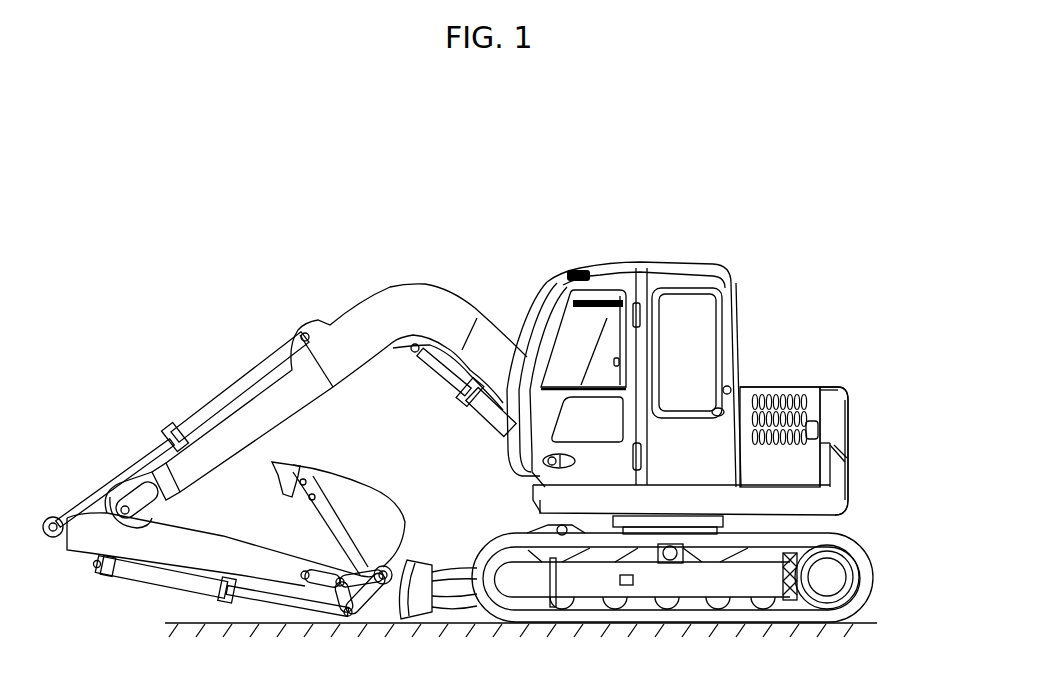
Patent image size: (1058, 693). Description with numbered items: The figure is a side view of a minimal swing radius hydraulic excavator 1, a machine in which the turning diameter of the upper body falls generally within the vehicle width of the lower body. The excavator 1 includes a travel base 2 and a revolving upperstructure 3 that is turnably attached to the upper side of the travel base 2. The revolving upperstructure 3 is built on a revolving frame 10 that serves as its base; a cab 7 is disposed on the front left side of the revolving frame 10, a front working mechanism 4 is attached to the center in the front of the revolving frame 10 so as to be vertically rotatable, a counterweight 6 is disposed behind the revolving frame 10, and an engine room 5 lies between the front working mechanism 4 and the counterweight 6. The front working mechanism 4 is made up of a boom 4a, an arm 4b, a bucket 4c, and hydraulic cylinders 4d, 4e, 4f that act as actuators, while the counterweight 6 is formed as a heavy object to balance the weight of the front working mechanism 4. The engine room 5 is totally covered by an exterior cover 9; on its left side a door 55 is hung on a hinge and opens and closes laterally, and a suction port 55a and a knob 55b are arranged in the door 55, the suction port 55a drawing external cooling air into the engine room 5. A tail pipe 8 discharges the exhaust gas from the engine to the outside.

The hydraulic excavator 1 is at (155, 313).
The travel base 2 is at (736, 581).
The revolving upperstructure 3 is at (739, 303).
The front working mechanism 4 is at (367, 300).
The boom 4a is at (430, 290).
The arm 4b is at (223, 533).
The bucket 4c is at (348, 478).
The hydraulic cylinder 4d is at (462, 396).
The hydraulic cylinder 4e is at (193, 407).
The hydraulic cylinder 4f is at (153, 580).
The engine room 5 is at (816, 379).
The counterweight 6 is at (844, 410).
The cab 7 is at (616, 259).
The tail pipe 8 is at (740, 388).
The exterior cover 9 is at (824, 388).
The revolving frame 10 is at (710, 503).
The door 55 is at (807, 468).
The suction port 55a is at (781, 387).
The knob 55b is at (820, 431).